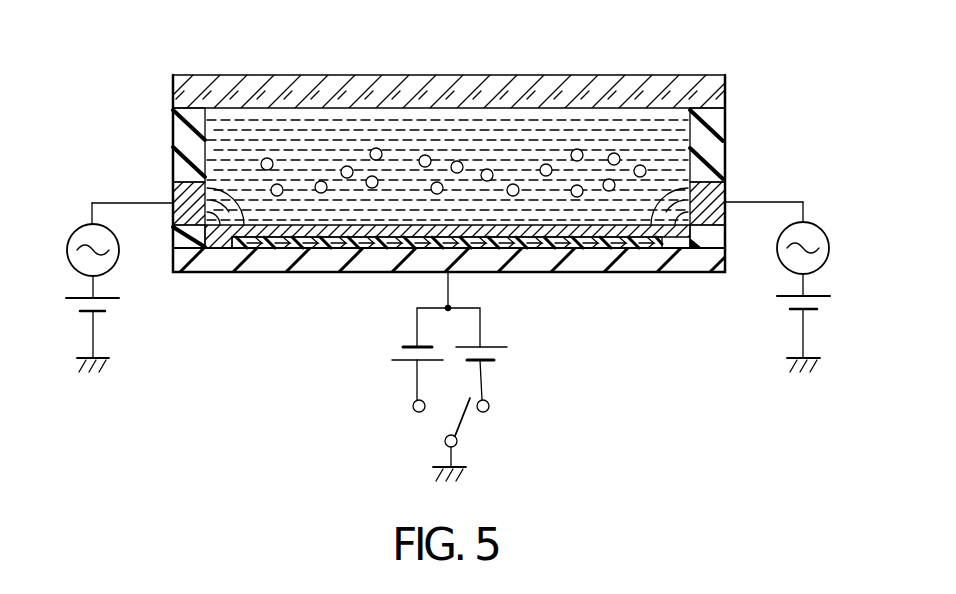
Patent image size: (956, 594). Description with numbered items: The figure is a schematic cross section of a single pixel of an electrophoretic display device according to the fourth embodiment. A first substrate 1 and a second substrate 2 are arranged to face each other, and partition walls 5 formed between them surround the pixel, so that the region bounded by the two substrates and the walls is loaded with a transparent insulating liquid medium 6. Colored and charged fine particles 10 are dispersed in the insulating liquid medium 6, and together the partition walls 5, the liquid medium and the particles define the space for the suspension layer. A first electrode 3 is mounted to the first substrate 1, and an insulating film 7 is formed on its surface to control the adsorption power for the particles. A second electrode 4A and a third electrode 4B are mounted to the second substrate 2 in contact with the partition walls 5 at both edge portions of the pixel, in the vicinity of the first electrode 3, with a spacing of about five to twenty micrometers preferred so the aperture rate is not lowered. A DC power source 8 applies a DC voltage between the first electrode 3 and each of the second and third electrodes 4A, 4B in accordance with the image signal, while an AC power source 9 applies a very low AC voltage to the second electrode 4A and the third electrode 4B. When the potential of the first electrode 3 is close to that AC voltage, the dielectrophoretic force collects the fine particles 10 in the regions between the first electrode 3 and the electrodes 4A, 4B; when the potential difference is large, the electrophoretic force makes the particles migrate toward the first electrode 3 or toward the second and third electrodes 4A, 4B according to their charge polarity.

The first substrate 1 is at (217, 262).
The second substrate 2 is at (338, 88).
The first electrode 3 is at (352, 236).
The second electrode 4A is at (173, 195).
The third electrode 4B is at (725, 193).
The partition walls 5 is at (173, 126).
The insulating liquid medium 6 is at (432, 127).
The insulating film 7 is at (296, 244).
The DC power source 8 is at (505, 355).
The AC power source 9 is at (77, 230).
The colored and charged fine particles 10 is at (576, 148).